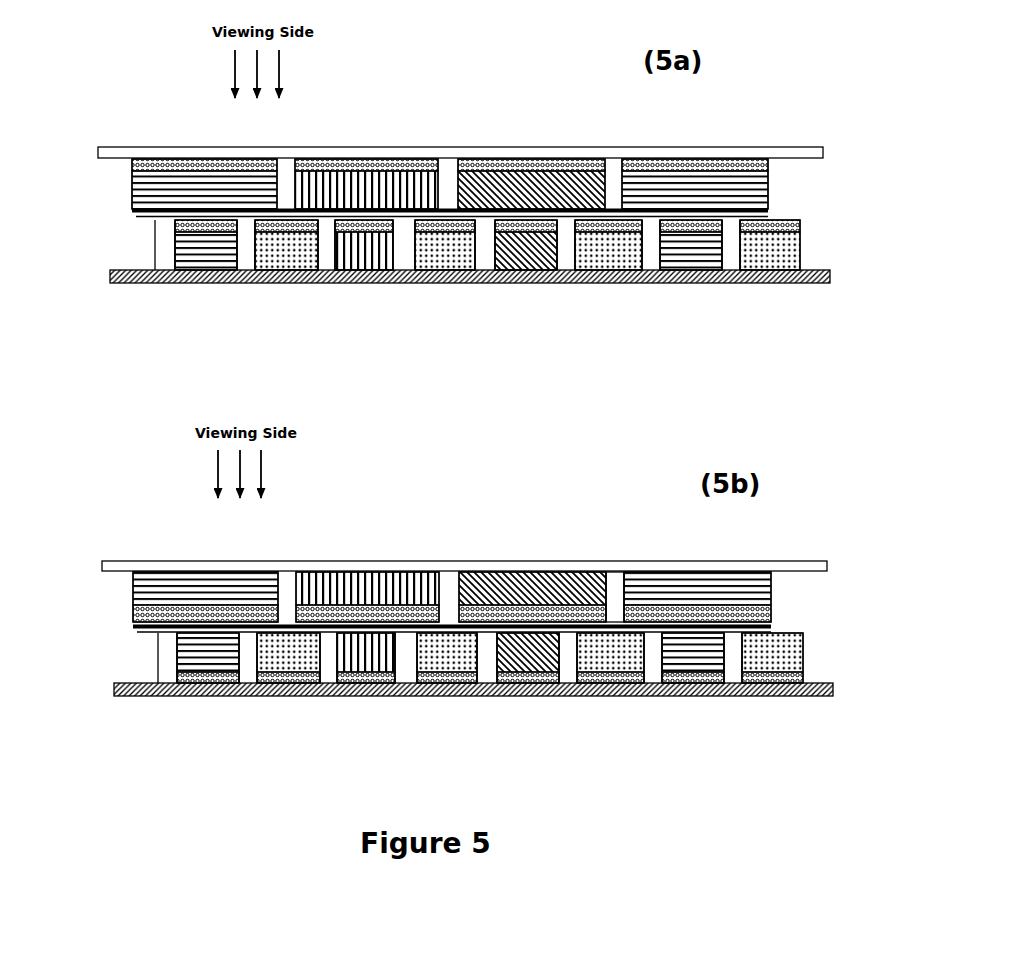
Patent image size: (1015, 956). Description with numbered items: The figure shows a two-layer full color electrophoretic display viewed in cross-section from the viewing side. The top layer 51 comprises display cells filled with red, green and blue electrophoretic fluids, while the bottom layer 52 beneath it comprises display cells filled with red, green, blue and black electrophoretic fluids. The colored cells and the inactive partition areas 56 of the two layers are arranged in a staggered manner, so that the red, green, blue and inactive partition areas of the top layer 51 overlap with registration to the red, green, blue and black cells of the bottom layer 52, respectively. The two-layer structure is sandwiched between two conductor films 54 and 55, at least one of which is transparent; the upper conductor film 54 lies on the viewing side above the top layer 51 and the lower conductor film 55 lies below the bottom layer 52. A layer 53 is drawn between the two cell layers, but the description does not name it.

In FIG. 5a, the top layer 51 is at (788, 183).
In FIG. 5b, the top layer 51 is at (982, 230).
In FIG. 5a, the bottom layer 52 is at (808, 255).
In FIG. 5b, the bottom layer 52 is at (820, 636).
In FIG. 5a, the transparent spacer / adhesive layer 53 is at (138, 226).
In FIG. 5b, the transparent spacer / adhesive layer 53 is at (140, 639).
In FIG. 5a, the conductor film 54 is at (170, 146).
In FIG. 5b, the conductor film 54 is at (152, 560).
In FIG. 5a, the conductor film 55 is at (172, 284).
In FIG. 5b, the conductor film 55 is at (178, 698).
In FIG. 5a, the inactive partition areas 56 is at (652, 255).
In FIG. 5b, the inactive partition areas 56 is at (615, 583).